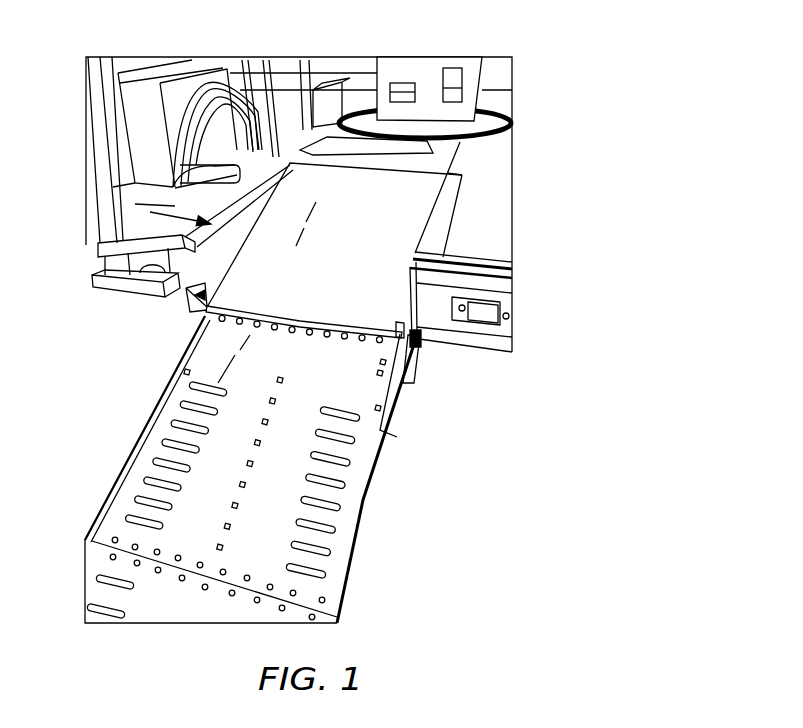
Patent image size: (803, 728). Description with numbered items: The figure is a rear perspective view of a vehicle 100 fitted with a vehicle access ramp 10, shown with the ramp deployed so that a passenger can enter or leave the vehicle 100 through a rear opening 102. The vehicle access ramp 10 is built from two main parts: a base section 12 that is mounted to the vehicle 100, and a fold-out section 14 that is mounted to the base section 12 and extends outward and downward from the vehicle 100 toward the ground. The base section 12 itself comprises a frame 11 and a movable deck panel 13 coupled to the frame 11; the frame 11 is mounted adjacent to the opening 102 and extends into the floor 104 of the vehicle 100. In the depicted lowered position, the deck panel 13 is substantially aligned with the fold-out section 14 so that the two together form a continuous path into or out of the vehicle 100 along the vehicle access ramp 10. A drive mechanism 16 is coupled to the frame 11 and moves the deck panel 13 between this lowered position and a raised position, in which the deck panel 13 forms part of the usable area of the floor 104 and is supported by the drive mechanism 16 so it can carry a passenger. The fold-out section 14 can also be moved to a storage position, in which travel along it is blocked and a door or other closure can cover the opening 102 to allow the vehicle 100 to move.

The vehicle 100 is at (562, 68).
The floor 104 is at (486, 222).
The deck panel 13 is at (360, 245).
The opening 102 is at (100, 248).
The base section 12 is at (122, 280).
The frame 11 is at (176, 282).
The drive mechanism 16 is at (166, 323).
The vehicle access ramp 10 is at (453, 452).
The fold-out section 14 is at (390, 500).